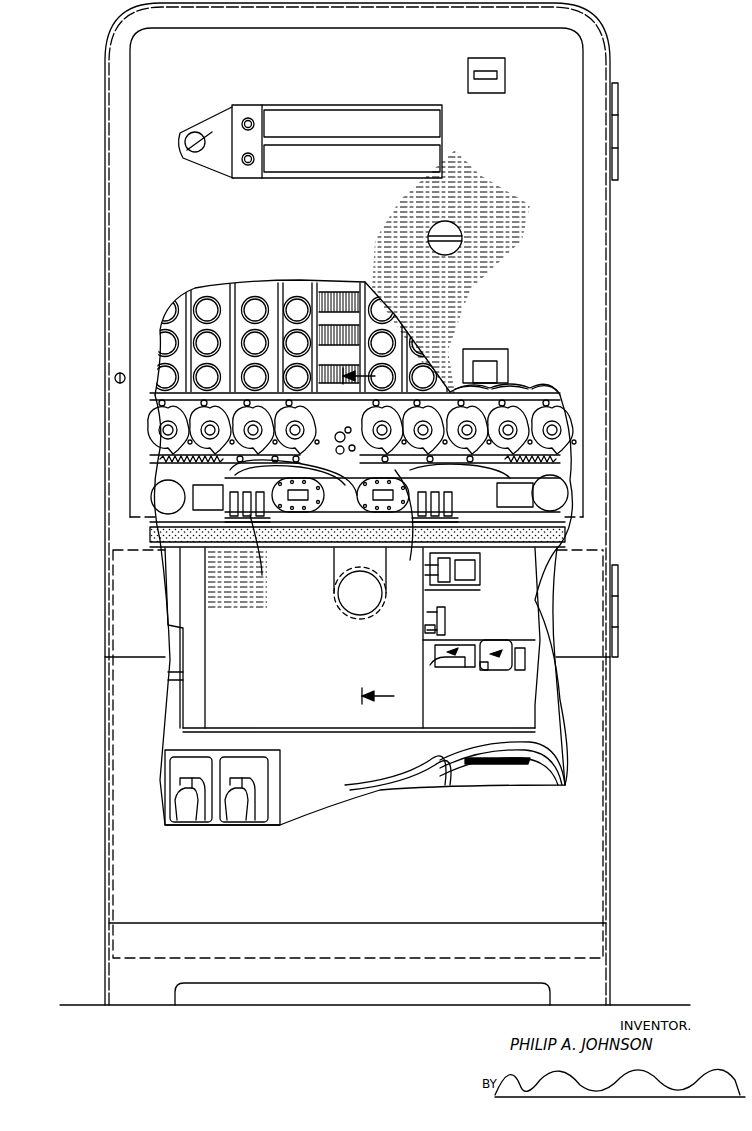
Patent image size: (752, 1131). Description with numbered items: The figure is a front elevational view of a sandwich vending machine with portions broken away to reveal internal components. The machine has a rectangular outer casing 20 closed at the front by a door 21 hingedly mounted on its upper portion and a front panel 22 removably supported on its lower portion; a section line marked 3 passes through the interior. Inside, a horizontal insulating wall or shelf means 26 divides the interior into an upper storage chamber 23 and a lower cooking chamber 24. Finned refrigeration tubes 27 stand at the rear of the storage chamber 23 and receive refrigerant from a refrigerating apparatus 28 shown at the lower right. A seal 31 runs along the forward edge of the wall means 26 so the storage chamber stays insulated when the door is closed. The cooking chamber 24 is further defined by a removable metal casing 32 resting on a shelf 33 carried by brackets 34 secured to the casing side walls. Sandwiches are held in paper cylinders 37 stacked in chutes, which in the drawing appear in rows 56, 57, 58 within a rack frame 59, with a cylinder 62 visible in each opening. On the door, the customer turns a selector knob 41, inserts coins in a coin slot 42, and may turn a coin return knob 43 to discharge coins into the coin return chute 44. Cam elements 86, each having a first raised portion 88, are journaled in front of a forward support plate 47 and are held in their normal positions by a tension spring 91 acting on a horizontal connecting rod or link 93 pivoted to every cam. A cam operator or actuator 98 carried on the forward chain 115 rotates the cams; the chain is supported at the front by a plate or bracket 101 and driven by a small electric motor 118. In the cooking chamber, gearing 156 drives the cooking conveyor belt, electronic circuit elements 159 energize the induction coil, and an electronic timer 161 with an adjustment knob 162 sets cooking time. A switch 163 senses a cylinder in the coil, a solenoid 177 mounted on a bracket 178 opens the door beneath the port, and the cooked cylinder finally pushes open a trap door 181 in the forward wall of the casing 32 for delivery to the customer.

The outer casing 20 is at (616, 52).
The door 21 is at (130, 205).
The front panel 22 is at (118, 872).
The upper storage chamber 23 is at (148, 292).
The lower cooking chamber 24 is at (118, 627).
The wall or shelf means 26 is at (190, 548).
The finned refrigeration tubes 27 is at (338, 320).
The refrigerating apparatus 28 is at (548, 758).
The section line 3- 3 is at (375, 536).
The seal 31 is at (547, 545).
The rectangular casing 32 is at (359, 640).
The shelf 33 is at (337, 732).
The brackets 34 is at (180, 625).
The paper cylinder 37 is at (300, 337).
The selector knob 41 is at (192, 138).
The coin slot 42 is at (497, 75).
The coin return knob 43 is at (450, 247).
The coin return chute 44 is at (490, 360).
The forward support plate 47 is at (545, 390).
The upper rack row 56 is at (175, 325).
The middle rack row 57 is at (200, 357).
The lower rack row 58 is at (205, 380).
The rack frame 59 is at (285, 282).
The product cans 62 is at (294, 344).
The cam elements 86 is at (626, 426).
The first raised portion 88 is at (323, 425).
The tension spring 91 is at (244, 158).
The horizontal connecting rod or link 93 is at (500, 485).
The cam operator or actuator 98 is at (330, 470).
The plate or bracket 101 is at (158, 530).
The forward chain 115 is at (278, 512).
The electric motor 118 is at (190, 505).
The gearing 156 is at (445, 620).
The electronic circuit elements 159 is at (243, 822).
The electronic timer 161 is at (498, 648).
The adjustment knob 162 is at (495, 660).
The switch 163 is at (440, 575).
The solenoid 177 is at (480, 573).
The bracket 178 is at (480, 590).
The trap door 181 is at (360, 605).